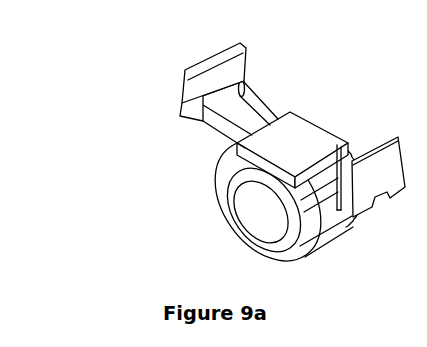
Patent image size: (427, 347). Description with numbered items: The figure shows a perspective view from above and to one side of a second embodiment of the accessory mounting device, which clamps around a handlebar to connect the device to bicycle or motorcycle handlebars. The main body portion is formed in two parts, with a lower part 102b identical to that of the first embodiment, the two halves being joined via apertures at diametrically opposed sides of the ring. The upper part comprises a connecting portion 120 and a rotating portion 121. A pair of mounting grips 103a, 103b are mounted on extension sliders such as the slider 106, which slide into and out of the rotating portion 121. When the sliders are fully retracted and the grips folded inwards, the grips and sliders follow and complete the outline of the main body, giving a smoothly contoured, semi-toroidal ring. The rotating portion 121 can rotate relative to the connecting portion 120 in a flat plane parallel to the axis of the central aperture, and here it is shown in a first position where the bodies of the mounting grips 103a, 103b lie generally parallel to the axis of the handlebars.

The mounting grip 103a is at (181, 85).
The mounting grip 103b is at (382, 152).
The slider 106 is at (241, 137).
The connecting portion 120 is at (222, 166).
The rotating portion 121 is at (296, 132).
The lower part 102b is at (221, 202).